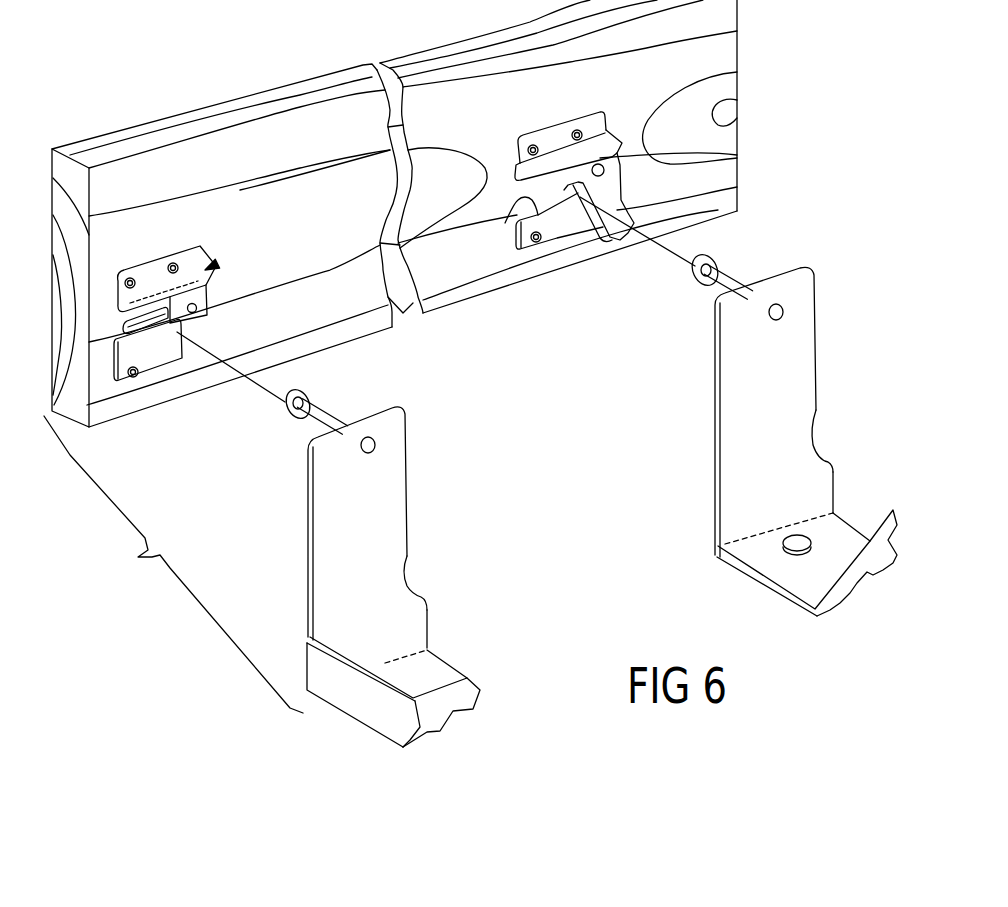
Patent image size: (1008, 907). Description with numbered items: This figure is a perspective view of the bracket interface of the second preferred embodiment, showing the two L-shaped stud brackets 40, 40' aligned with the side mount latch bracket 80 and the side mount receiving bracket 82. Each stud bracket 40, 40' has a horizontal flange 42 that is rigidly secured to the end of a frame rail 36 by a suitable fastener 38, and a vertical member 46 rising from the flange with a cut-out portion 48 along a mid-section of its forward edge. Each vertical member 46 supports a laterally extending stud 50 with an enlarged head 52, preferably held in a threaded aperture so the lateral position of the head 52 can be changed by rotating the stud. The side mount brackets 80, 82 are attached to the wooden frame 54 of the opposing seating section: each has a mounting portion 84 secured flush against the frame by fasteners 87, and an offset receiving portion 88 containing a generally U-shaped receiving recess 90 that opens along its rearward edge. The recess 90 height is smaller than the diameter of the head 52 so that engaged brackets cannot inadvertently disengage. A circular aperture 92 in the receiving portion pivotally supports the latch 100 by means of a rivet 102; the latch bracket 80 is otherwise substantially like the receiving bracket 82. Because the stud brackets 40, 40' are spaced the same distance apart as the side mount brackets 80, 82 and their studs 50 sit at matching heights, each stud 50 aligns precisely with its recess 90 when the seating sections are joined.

The frame rail 36 is at (440, 706).
The fastener 38 is at (783, 549).
The L-shaped stud bracket 40 is at (701, 384).
The L-shaped stud bracket 40' is at (291, 499).
The horizontal flange 42 is at (444, 672).
The vertical member 46 is at (327, 606).
The cut-out portion 48 is at (415, 590).
The stud 50 is at (327, 420).
The enlarged head 52 is at (288, 406).
The wooden frame 54 is at (216, 150).
The side mount latch bracket 80 is at (605, 127).
The side mount receiving bracket 82 is at (217, 264).
The mounting portion 84 is at (150, 276).
The fastener 87 is at (134, 278).
The offset receiving portion 88 is at (208, 288).
The receiving recess 90 is at (127, 330).
The circular aperture 92 is at (196, 311).
The latch 100 is at (736, 188).
The rivet 102 is at (736, 158).